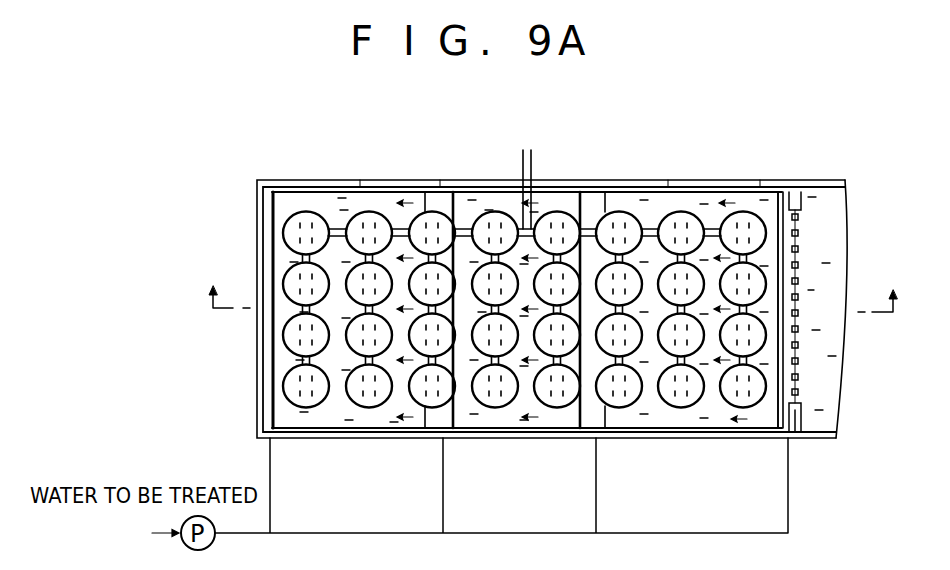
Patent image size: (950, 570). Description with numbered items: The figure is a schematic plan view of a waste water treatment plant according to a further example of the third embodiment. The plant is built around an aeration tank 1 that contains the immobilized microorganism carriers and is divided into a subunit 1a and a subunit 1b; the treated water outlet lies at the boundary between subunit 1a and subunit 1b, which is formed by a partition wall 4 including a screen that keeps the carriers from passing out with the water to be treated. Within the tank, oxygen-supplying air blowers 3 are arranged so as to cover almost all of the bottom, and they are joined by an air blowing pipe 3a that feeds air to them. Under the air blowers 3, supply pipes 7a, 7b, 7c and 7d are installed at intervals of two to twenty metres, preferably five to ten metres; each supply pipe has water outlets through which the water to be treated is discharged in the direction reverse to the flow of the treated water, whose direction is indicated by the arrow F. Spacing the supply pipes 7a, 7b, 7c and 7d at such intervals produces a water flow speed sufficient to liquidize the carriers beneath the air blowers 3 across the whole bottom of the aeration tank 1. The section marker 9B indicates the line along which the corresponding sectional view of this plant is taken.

The aeration tank 1 is at (262, 254).
The subunit 1a is at (752, 181).
The subunit 1b is at (823, 181).
The air blowers 3 is at (620, 228).
The air blowing pipe 3a is at (588, 229).
The partition wall 4 is at (803, 238).
The supply pipe 7a is at (780, 407).
The supply pipe 7b is at (579, 410).
The supply pipe 7c is at (430, 412).
The partition plate 7d is at (258, 400).
The arrow F is at (743, 421).
The section line 9B is at (554, 287).